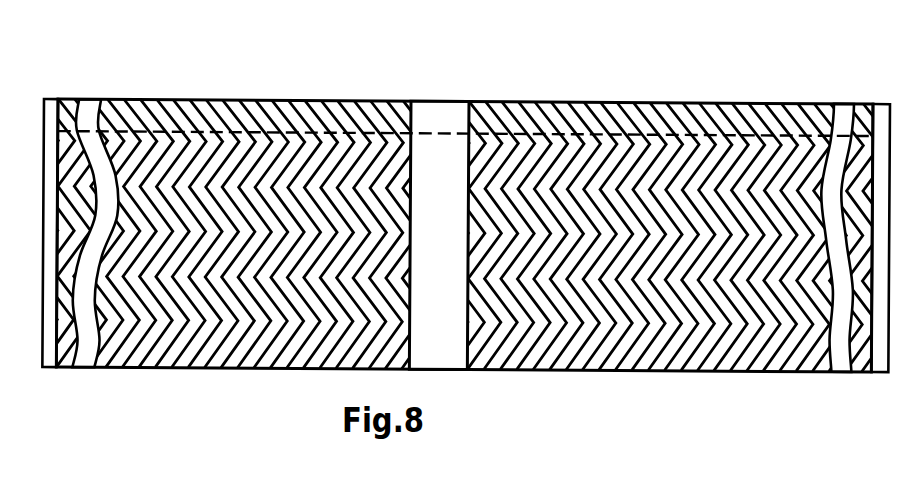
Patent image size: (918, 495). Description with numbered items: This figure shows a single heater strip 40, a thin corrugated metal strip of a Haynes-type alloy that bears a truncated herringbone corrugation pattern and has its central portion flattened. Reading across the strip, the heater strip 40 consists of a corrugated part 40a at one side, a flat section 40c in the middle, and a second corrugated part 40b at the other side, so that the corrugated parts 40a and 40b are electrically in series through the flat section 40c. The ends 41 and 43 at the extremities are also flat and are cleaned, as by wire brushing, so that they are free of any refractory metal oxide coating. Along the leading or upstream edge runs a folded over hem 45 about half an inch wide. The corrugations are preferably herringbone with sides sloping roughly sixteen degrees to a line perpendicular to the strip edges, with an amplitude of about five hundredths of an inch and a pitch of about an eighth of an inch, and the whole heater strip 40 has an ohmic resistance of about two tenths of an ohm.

The heater strip 40 is at (511, 88).
The corrugated part 40a is at (628, 150).
The second corrugated part 40b is at (277, 348).
The flat section 40c is at (440, 370).
The end 41 is at (51, 112).
The end 43 is at (886, 125).
The folded over hem 45 is at (718, 117).